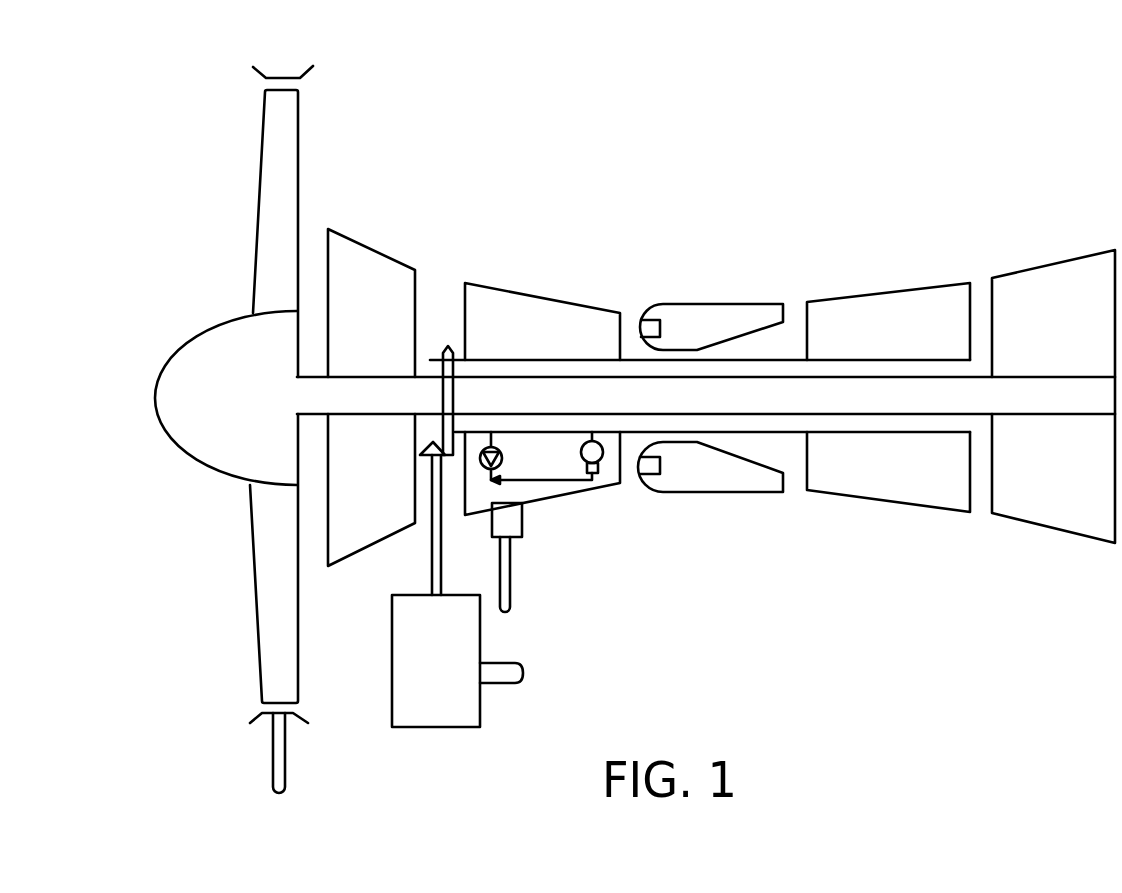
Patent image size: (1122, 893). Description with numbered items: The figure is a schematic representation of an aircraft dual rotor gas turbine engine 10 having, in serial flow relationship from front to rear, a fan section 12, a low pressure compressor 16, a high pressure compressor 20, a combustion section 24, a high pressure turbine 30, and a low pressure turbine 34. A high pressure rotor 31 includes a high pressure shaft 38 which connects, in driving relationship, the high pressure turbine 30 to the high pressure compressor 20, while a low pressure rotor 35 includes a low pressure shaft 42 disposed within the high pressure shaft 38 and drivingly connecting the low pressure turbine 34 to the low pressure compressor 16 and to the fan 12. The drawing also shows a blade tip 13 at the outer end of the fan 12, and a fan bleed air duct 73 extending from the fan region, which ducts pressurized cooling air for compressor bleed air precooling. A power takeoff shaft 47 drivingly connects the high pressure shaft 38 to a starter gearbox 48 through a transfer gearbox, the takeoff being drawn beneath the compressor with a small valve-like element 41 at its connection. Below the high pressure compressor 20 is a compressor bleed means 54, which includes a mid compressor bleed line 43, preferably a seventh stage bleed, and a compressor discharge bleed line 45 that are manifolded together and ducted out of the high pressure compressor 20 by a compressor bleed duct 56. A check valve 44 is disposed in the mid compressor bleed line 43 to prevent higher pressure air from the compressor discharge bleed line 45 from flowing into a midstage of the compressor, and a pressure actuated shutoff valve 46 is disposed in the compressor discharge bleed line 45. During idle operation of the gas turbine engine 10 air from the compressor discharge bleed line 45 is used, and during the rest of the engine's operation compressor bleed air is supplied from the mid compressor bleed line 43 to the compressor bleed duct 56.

The gas turbine engine 10 is at (800, 584).
The fan section 12 is at (293, 115).
The blade tip 13 is at (303, 72).
The low pressure compressor 16 is at (367, 242).
The high pressure compressor 20 is at (502, 288).
The combustion section 24 is at (683, 302).
The high pressure turbine 30 is at (842, 297).
The high pressure rotor 31 is at (636, 360).
The low pressure turbine 34 is at (1022, 270).
The low pressure rotor 35 is at (788, 417).
The high pressure shaft 38 is at (437, 361).
The valve 41 is at (433, 442).
The low pressure shaft 42 is at (313, 377).
The mid compressor bleed line 43 is at (496, 445).
The check valve 44 is at (480, 462).
The compressor discharge bleed line 45 is at (598, 443).
The pressure actuated shutoff valve 46 is at (582, 457).
The power takeoff shaft 47 is at (432, 563).
The starter gearbox 48 is at (413, 645).
The compressor bleed means 54 is at (588, 519).
The compressor bleed duct 56 is at (505, 568).
The fan bleed air duct 73 is at (280, 760).